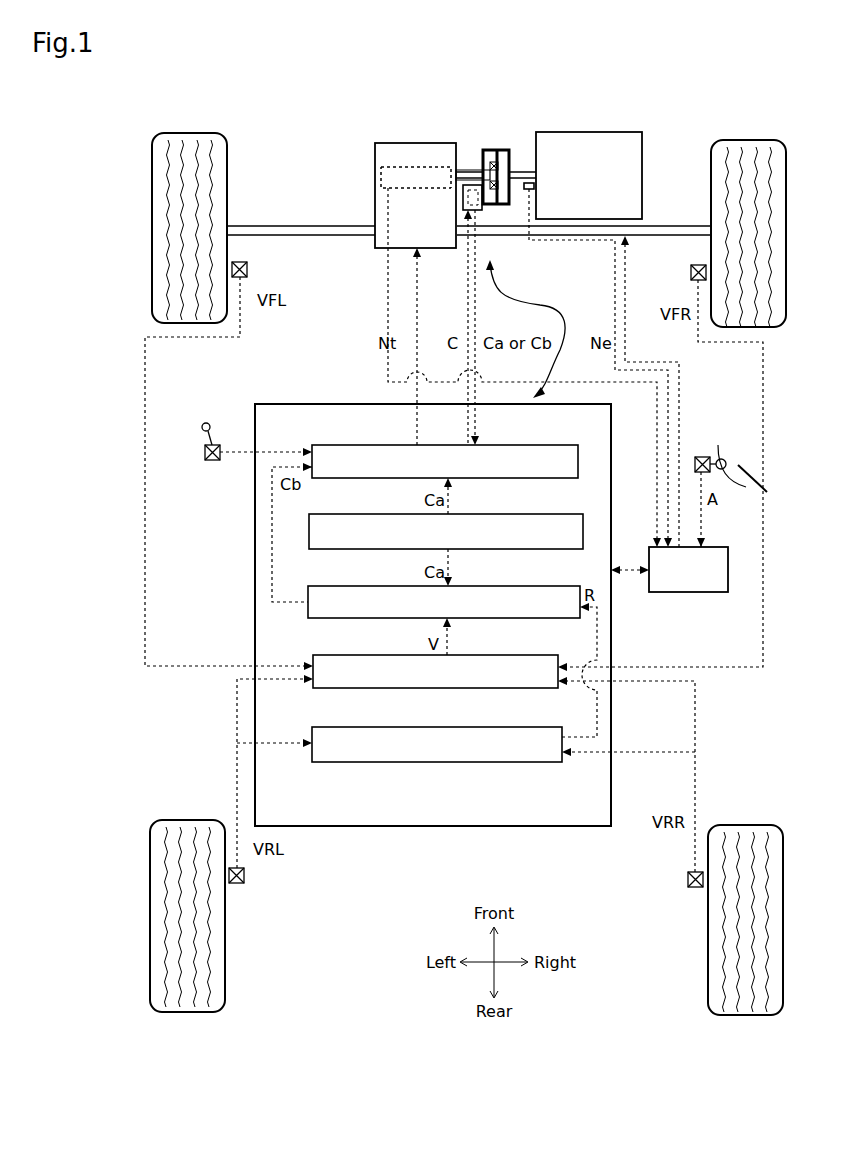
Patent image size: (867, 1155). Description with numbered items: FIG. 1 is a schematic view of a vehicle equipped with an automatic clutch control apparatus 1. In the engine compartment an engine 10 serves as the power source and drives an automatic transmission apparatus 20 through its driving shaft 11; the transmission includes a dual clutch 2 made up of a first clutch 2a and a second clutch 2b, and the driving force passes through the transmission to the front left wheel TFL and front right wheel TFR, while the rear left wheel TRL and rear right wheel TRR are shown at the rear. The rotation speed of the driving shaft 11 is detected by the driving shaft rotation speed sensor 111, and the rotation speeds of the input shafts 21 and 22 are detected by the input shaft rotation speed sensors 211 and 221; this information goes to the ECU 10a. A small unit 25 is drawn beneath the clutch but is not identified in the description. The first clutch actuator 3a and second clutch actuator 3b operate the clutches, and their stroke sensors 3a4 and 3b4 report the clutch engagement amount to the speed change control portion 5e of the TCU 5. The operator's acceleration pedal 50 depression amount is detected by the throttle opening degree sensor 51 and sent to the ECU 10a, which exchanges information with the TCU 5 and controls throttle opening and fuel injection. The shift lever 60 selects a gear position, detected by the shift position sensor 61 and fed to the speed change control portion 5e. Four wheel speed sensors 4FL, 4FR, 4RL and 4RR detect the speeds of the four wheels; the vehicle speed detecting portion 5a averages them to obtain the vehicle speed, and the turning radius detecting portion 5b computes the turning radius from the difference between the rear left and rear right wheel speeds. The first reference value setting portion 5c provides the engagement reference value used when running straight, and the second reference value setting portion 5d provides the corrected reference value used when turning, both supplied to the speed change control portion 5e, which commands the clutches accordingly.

The automatic clutch control apparatus 1 is at (535, 329).
The dual clutch 2 is at (465, 110).
The first clutch 2a is at (505, 150).
The second clutch 2b is at (489, 150).
The first clutch actuator 3a is at (483, 206).
The second clutch actuator 3b is at (560, 263).
The stroke sensor 3a4 is at (480, 210).
The stroke sensor 3b4 is at (570, 285).
The front left wheel vehicle speed sensor 4FL is at (248, 268).
The front right wheel vehicle speed sensor 4FR is at (691, 268).
The rear left wheel vehicle speed sensor 4RL is at (246, 880).
The rear right wheel vehicle speed sensor 4RR is at (690, 883).
The TCU 5 is at (370, 404).
The vehicle speed detecting portion 5a is at (482, 655).
The turning radius detecting portion 5b is at (482, 727).
The first reference value setting portion 5c is at (484, 514).
The second reference value setting portion 5d is at (484, 586).
The speed change control portion 5e is at (510, 445).
The engine 10 is at (610, 132).
The ECU 10a is at (728, 547).
The driving shaft 11 is at (526, 171).
The automatic transmission apparatus 20 is at (392, 143).
The input shaft 21 is at (458, 176).
The input shaft 22 is at (468, 171).
The hydraulic control device 25 is at (466, 248).
The acceleration pedal 50 is at (745, 468).
The throttle opening degree sensor 51 is at (703, 455).
The shift lever 60 is at (206, 423).
The shift position sensor 61 is at (204, 459).
The driving shaft rotation speed sensor 111 is at (584, 365).
The input shaft rotation speed sensor 211 is at (383, 171).
The input shaft rotation speed sensor 221 is at (370, 155).
The front left wheel TFL is at (195, 133).
The front right wheel TFR is at (758, 140).
The rear left wheel TRL is at (192, 820).
The rear right wheel TRR is at (753, 825).